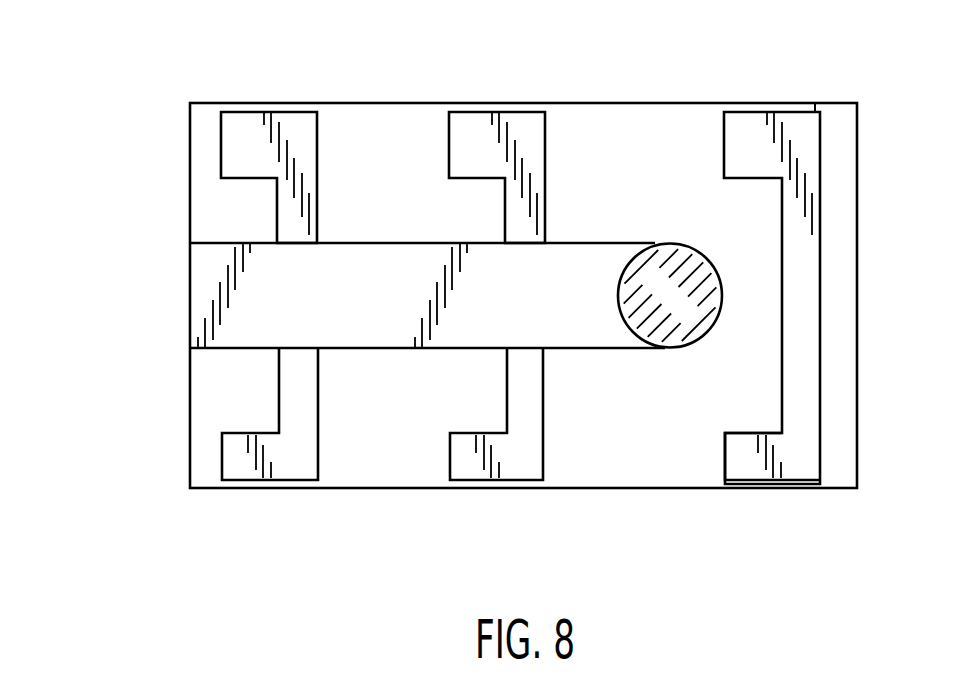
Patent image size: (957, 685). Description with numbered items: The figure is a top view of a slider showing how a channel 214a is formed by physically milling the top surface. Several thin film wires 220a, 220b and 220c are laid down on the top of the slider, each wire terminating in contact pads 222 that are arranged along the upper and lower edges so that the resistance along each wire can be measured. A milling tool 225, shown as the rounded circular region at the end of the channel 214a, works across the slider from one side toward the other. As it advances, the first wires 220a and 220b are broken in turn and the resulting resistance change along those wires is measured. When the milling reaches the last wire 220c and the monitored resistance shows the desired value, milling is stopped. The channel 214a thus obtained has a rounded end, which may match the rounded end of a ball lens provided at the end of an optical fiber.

The channel 214a is at (188, 293).
The contact pads 222 is at (245, 135).
The milling tool 225 is at (674, 284).
The thin film wire 220a is at (303, 398).
The thin film wire 220b is at (523, 400).
The thin film wire 220c is at (792, 399).